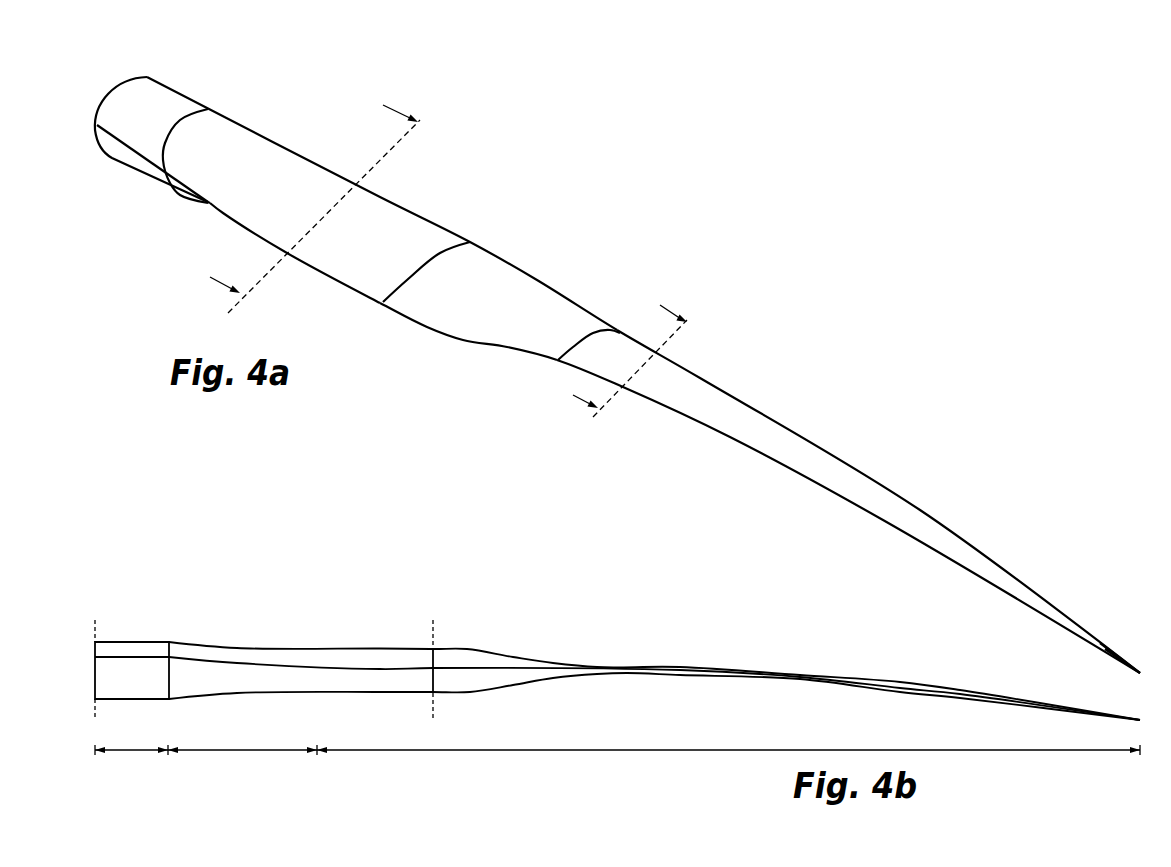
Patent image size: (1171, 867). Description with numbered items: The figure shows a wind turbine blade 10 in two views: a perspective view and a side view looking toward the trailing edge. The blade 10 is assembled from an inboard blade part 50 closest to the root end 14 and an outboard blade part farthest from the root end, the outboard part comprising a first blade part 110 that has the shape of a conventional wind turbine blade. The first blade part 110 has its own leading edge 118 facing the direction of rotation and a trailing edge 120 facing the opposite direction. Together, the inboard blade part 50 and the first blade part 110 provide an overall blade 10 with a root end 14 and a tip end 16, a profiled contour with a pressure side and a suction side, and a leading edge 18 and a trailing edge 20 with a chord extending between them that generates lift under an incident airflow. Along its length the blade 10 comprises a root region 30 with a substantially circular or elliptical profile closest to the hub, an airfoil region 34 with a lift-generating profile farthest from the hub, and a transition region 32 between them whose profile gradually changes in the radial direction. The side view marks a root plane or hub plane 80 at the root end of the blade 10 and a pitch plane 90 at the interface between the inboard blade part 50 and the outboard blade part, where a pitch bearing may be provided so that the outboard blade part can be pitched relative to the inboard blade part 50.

In FIG. 4A, the wind turbine blade 10 is at (740, 297).
In FIG. 4B, the wind turbine blade 10 is at (657, 643).
In FIG. 4A, the root end 14 is at (114, 86).
In FIG. 4A, the tip end 16 is at (1142, 667).
In FIG. 4A, the leading edge 18 is at (557, 288).
In FIG. 4A, the trailing edge 20 is at (495, 345).
In FIG. 4A, the inboard blade part 50 is at (192, 200).
In FIG. 4B, the inboard blade part 50 is at (237, 647).
In FIG. 4B, the root plane 80 is at (97, 628).
In FIG. 4B, the pitch plane 90 is at (437, 628).
In FIG. 4A, the first blade part 110 is at (763, 420).
In FIG. 4B, the first blade part 110 is at (773, 667).
In FIG. 4A, the leading edge of the first blade part 118 is at (840, 458).
In FIG. 4A, the trailing edge of the first blade part 120 is at (782, 463).
In FIG. 4B, the root region 30 is at (131, 741).
In FIG. 4B, the transition region 32 is at (242, 741).
In FIG. 4B, the airfoil region 34 is at (728, 741).